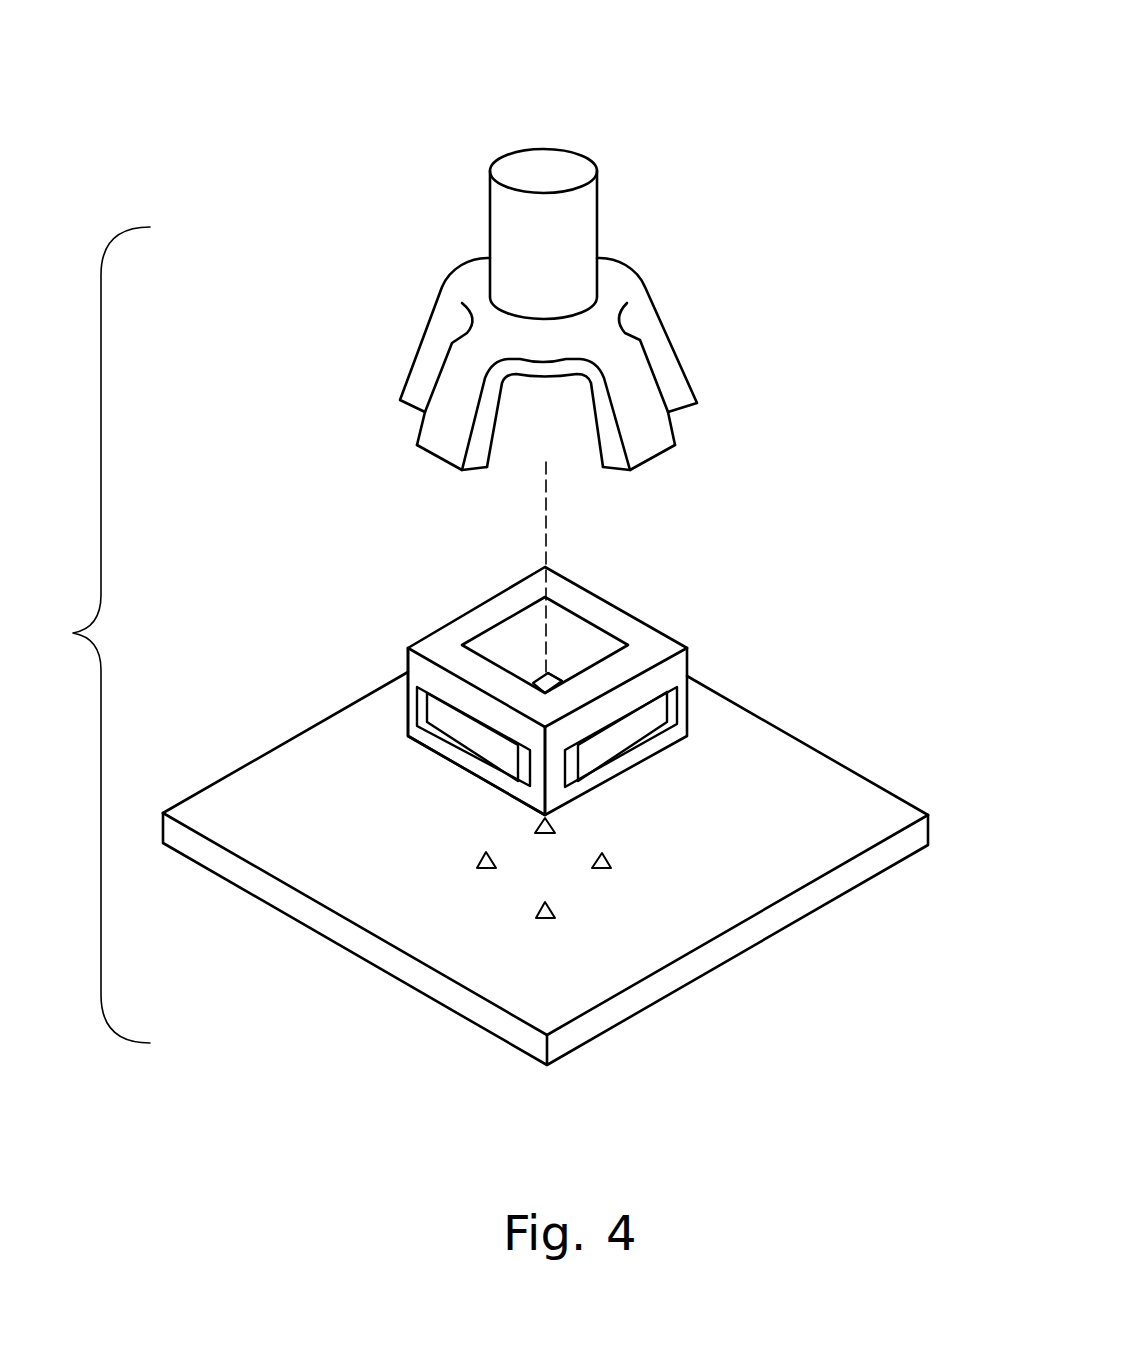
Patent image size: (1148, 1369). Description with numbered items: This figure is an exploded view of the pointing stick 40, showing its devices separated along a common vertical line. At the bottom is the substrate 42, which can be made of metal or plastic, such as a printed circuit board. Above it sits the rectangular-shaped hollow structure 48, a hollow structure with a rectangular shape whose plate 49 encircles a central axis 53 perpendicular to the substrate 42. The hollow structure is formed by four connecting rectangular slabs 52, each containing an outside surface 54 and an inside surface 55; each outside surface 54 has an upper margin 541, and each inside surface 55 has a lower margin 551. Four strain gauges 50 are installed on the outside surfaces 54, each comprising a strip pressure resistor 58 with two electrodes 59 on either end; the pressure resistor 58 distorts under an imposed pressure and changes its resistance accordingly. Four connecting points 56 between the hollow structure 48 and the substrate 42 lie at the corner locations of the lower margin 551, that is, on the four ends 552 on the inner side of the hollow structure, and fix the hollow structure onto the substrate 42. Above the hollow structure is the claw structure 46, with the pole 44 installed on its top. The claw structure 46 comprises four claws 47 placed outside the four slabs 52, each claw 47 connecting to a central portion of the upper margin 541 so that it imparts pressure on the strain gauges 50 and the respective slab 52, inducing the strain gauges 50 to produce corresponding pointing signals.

The pointing stick 40 is at (757, 75).
The substrate 42 is at (853, 768).
The pole 44 is at (565, 167).
The claw structure 46 is at (642, 256).
The claw 47 is at (648, 408).
The rectangular-shaped hollow structure 48 is at (762, 561).
The plate 49 is at (637, 598).
The strain gauge 50 is at (425, 675).
The rectangular slab 52 is at (652, 640).
The central axis 53 is at (548, 545).
The outside surface 54 is at (688, 676).
The upper margin 541 is at (650, 663).
The inside surface 55 is at (527, 637).
The lower margin 551 is at (538, 678).
The end 552 is at (547, 676).
The connecting point 56 is at (608, 862).
The pressure resistor 58 is at (483, 743).
The electrode 59 is at (420, 717).